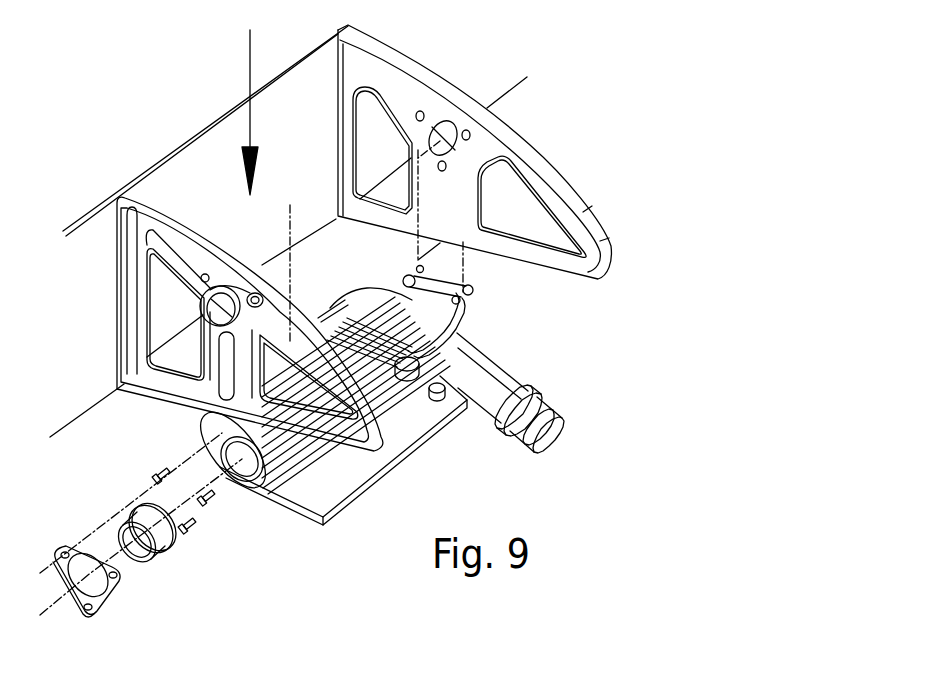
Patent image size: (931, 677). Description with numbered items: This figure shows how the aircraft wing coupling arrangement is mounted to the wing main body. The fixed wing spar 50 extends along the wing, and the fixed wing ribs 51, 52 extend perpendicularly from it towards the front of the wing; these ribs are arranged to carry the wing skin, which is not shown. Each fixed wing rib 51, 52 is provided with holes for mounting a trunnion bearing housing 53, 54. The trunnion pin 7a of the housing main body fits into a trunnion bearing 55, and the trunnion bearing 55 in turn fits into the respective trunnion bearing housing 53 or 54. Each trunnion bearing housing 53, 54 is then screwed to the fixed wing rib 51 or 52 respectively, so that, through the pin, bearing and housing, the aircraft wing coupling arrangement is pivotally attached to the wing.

The fixed wing spar 50 is at (213, 125).
The fixed wing rib 51 is at (342, 62).
The fixed wing rib 52 is at (125, 238).
The trunnion bearing housing 53 is at (112, 588).
The trunnion bearing housing 54 is at (474, 291).
The trunnion bearing 55 is at (163, 549).
The trunnion pin 7a is at (237, 476).